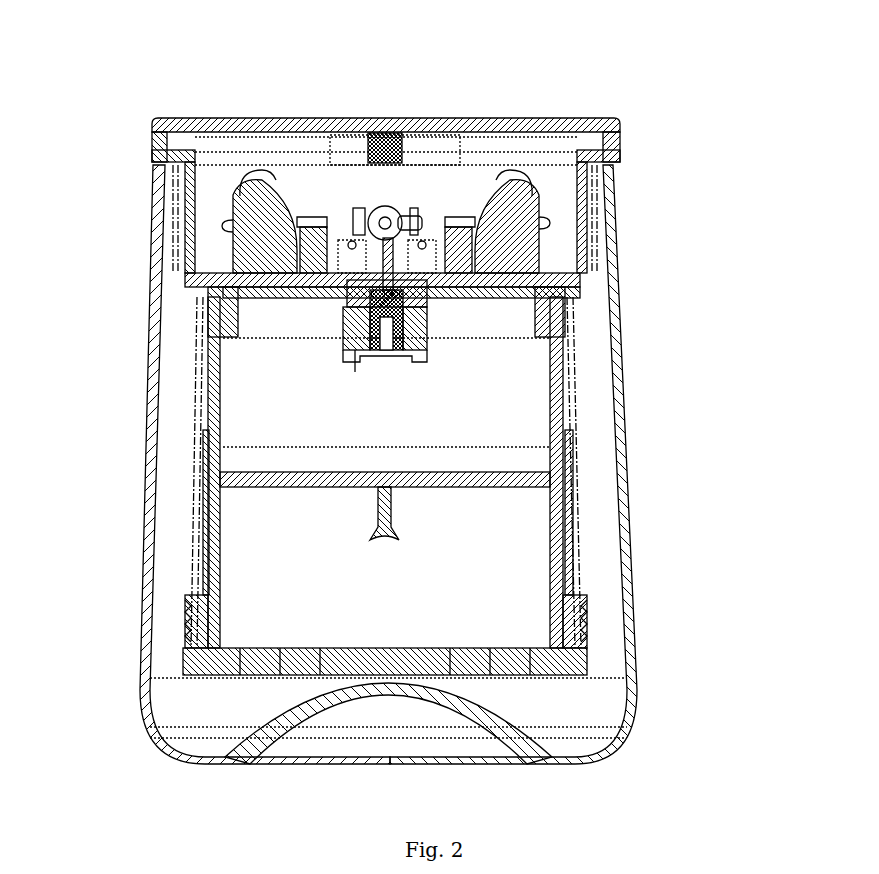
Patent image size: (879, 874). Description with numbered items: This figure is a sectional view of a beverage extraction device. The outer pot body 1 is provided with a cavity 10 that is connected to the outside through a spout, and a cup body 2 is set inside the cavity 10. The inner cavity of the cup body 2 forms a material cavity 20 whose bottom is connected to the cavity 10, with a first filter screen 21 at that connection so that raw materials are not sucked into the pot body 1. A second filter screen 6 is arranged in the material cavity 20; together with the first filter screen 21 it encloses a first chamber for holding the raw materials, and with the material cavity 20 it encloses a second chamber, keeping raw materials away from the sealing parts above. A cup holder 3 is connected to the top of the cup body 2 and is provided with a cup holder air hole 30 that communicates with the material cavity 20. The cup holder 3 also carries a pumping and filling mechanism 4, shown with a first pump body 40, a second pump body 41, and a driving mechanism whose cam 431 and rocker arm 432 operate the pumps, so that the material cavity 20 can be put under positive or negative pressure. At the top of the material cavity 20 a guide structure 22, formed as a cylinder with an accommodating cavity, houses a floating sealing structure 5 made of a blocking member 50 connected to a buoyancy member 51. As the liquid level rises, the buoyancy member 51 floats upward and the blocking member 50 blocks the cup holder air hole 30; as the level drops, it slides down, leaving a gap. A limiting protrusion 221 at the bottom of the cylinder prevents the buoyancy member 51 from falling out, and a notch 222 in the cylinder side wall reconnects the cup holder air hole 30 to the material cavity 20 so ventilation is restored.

The pot body 1 is at (620, 562).
The cavity 10 is at (597, 612).
The cup body 2 is at (563, 427).
The material cavity 20 is at (530, 513).
The first filter screen 21 is at (240, 673).
The guide structure 22 is at (347, 331).
The limiting protrusion 221 is at (357, 360).
The notch 222 is at (347, 308).
The cup holder 3 is at (300, 242).
The cup holder air hole 30 is at (327, 242).
The pumping and filling mechanism 4 is at (540, 50).
The first pump body 40 is at (272, 192).
The second pump body 41 is at (518, 192).
The cam 431 is at (397, 207).
The rocker arm 432 is at (420, 222).
The floating sealing structure 5 is at (763, 267).
The blocking member 50 is at (427, 302).
The buoyancy member 51 is at (427, 328).
The second filter screen 6 is at (243, 480).